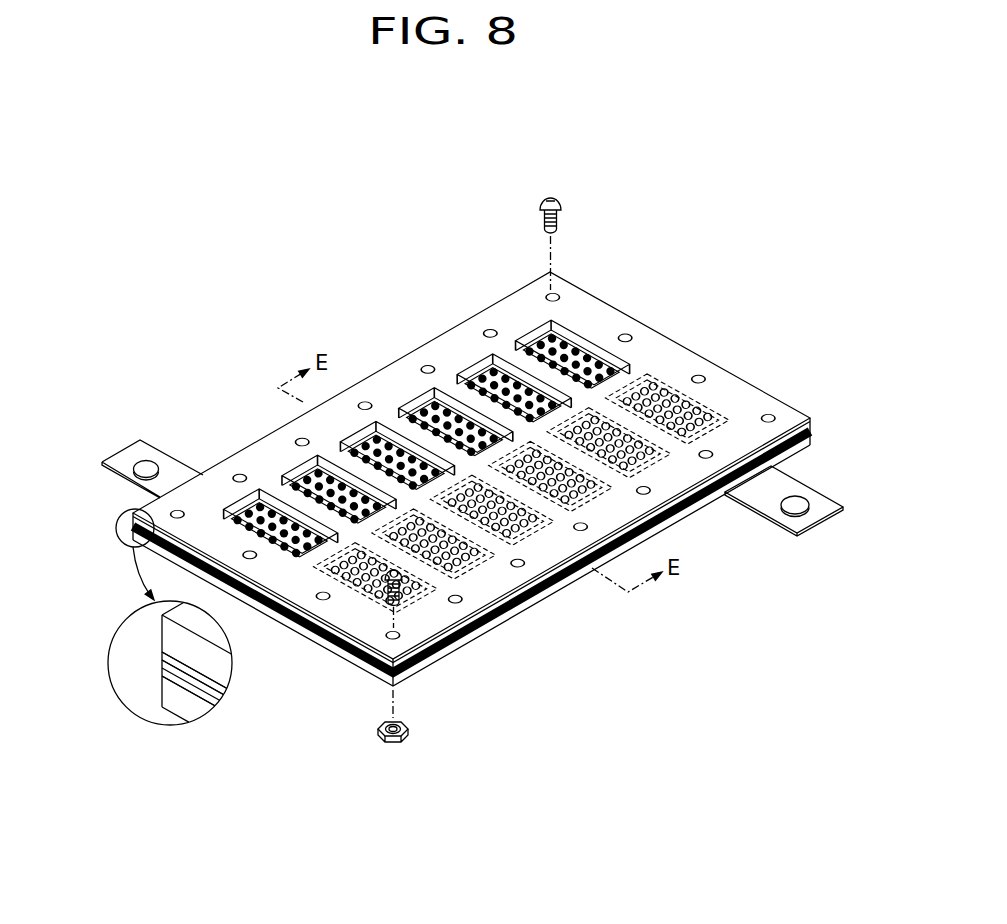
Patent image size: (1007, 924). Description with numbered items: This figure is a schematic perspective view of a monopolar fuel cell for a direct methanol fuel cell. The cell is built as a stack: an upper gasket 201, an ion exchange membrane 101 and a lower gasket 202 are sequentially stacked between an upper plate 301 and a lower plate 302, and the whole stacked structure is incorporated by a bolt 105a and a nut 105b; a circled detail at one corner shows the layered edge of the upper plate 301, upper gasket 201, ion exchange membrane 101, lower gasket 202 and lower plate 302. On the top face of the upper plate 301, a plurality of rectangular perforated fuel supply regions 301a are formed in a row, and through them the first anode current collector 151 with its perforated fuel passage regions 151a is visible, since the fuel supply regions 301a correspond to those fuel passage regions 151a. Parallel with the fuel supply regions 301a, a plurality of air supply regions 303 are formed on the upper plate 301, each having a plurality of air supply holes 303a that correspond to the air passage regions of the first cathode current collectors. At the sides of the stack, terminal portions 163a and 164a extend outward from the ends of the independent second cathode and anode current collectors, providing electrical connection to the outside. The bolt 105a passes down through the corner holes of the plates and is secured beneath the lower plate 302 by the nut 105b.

The ion exchange membrane 101 is at (163, 664).
The bolt 105a is at (556, 197).
The nut 105b is at (380, 740).
The first anode current collector 151 is at (530, 347).
The fuel passage region 151a is at (574, 347).
The terminal portion 163a is at (178, 468).
The terminal portion 164a is at (823, 503).
The upper gasket 201 is at (163, 655).
The lower gasket 202 is at (163, 672).
The upper plate 301 is at (792, 420).
The fuel supply region 301a is at (598, 352).
The lower plate 302 is at (163, 693).
The air supply region 303 is at (667, 381).
The air supply hole 303a is at (707, 413).